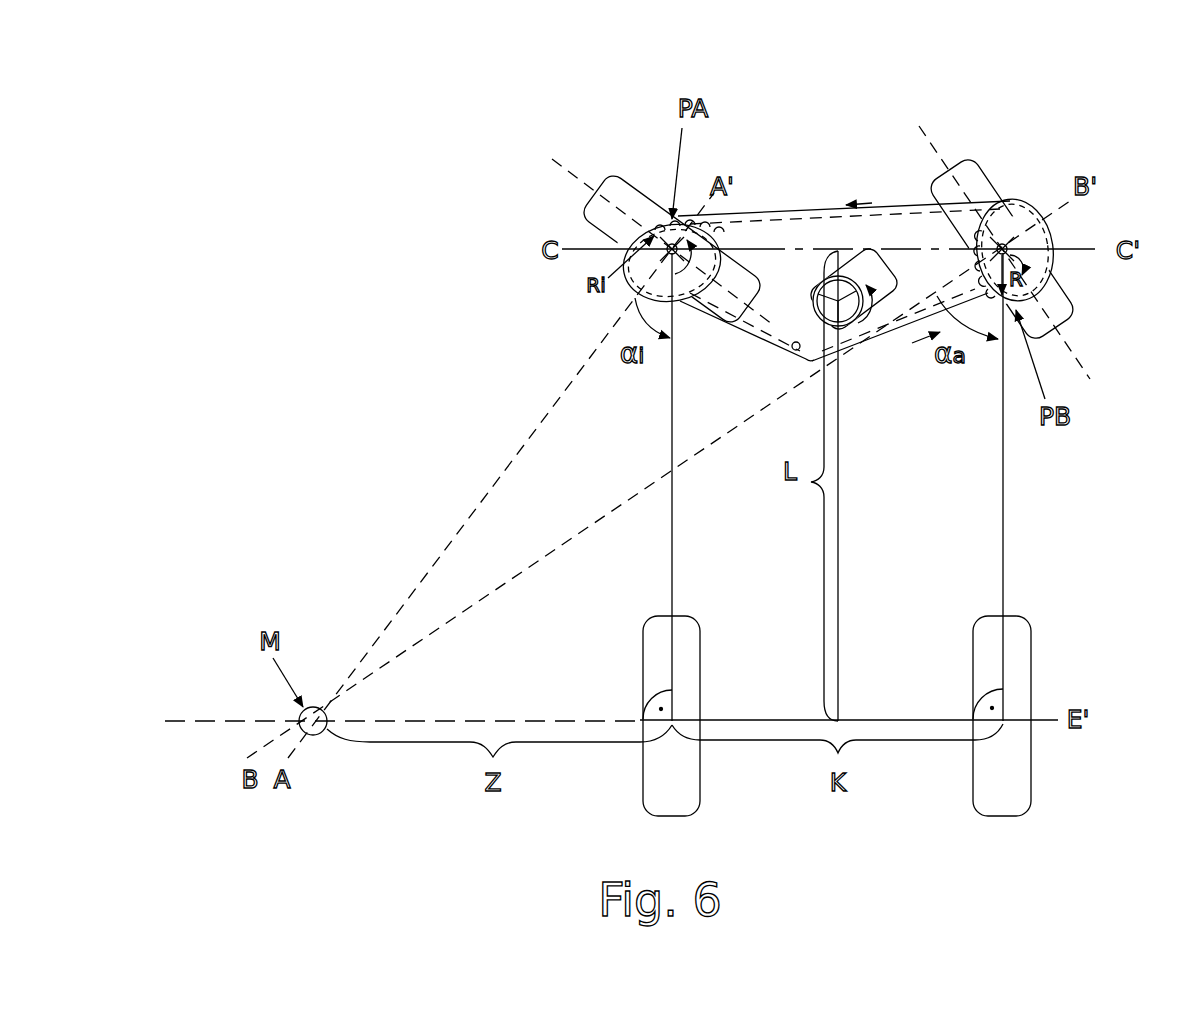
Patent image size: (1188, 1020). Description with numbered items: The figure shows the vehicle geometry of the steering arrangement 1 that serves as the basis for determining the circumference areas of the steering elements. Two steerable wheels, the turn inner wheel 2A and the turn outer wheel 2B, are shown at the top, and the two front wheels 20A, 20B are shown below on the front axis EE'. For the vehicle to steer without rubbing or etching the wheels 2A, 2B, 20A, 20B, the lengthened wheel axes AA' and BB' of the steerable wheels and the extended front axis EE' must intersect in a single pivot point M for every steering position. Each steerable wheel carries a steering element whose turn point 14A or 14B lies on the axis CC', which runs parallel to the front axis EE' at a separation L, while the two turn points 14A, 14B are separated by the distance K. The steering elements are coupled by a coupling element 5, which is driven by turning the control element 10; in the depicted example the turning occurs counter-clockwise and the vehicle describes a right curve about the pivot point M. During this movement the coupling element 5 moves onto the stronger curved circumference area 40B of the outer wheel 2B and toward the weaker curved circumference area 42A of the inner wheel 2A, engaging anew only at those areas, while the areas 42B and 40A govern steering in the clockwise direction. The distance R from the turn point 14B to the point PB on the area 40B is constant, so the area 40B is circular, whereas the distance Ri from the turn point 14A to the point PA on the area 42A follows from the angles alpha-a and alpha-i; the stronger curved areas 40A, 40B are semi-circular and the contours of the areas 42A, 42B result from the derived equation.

The drive arrangement 1 is at (1024, 147).
The turn inner wheel 2A is at (602, 218).
The turn outer wheel 2B is at (1062, 300).
The coupling element 5 is at (786, 212).
The control element 10 is at (883, 280).
The turn point of the inner steering element 14A is at (674, 243).
The turn point of the outer steering element 14B is at (1004, 243).
The front wheel 20A is at (683, 650).
The front wheel 20B is at (1015, 650).
The circumference area of the inner steering element 40A is at (704, 300).
The circumference area of the outer steering element 40B is at (1055, 230).
The circumference area of the inner steering element 42A is at (656, 222).
The circumference area of the outer steering element 42B is at (975, 227).